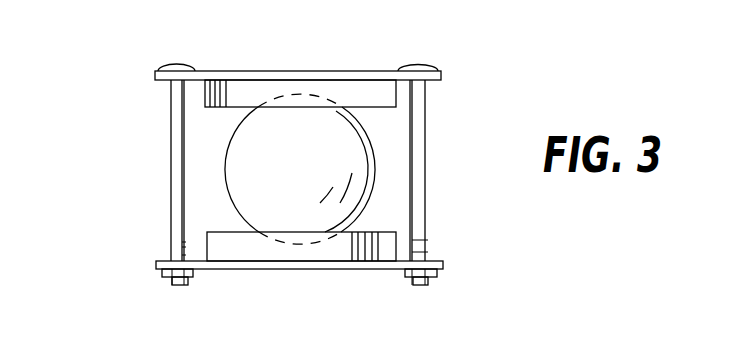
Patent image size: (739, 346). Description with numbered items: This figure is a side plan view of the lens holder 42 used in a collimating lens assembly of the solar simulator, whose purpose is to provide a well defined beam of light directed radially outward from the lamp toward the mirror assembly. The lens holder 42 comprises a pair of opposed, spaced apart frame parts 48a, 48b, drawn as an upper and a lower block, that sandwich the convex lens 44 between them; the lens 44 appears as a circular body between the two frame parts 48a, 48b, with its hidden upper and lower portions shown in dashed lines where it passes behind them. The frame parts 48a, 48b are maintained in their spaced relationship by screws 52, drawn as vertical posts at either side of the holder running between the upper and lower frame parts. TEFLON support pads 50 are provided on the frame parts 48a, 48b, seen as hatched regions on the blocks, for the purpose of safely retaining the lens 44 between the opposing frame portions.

The lens holder 42 is at (157, 128).
The convex lens 44 is at (313, 180).
The frame part 48a is at (317, 71).
The frame part 48b is at (327, 264).
The support pad 50 is at (397, 89).
The screw 52 is at (171, 160).